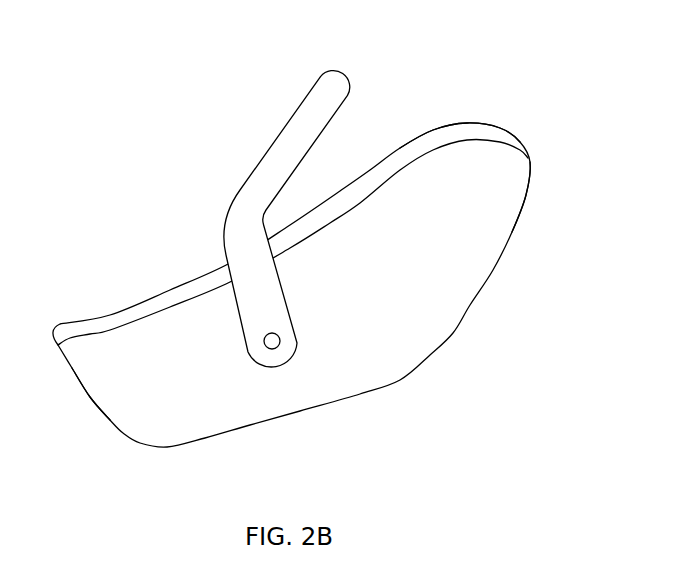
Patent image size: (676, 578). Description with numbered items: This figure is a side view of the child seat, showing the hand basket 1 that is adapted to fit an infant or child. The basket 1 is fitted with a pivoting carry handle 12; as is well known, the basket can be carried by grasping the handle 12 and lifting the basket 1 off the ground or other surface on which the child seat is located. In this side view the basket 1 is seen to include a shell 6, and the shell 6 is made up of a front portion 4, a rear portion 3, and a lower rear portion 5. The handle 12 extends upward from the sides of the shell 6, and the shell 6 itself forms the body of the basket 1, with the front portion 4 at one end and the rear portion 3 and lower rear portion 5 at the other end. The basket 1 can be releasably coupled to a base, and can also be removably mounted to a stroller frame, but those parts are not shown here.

The hand basket 1 is at (102, 328).
The rear portion 3 is at (497, 131).
The front portion 4 is at (98, 382).
The lower rear portion 5 is at (513, 180).
The shell 6 is at (183, 325).
The pivoting carry handle 12 is at (323, 78).